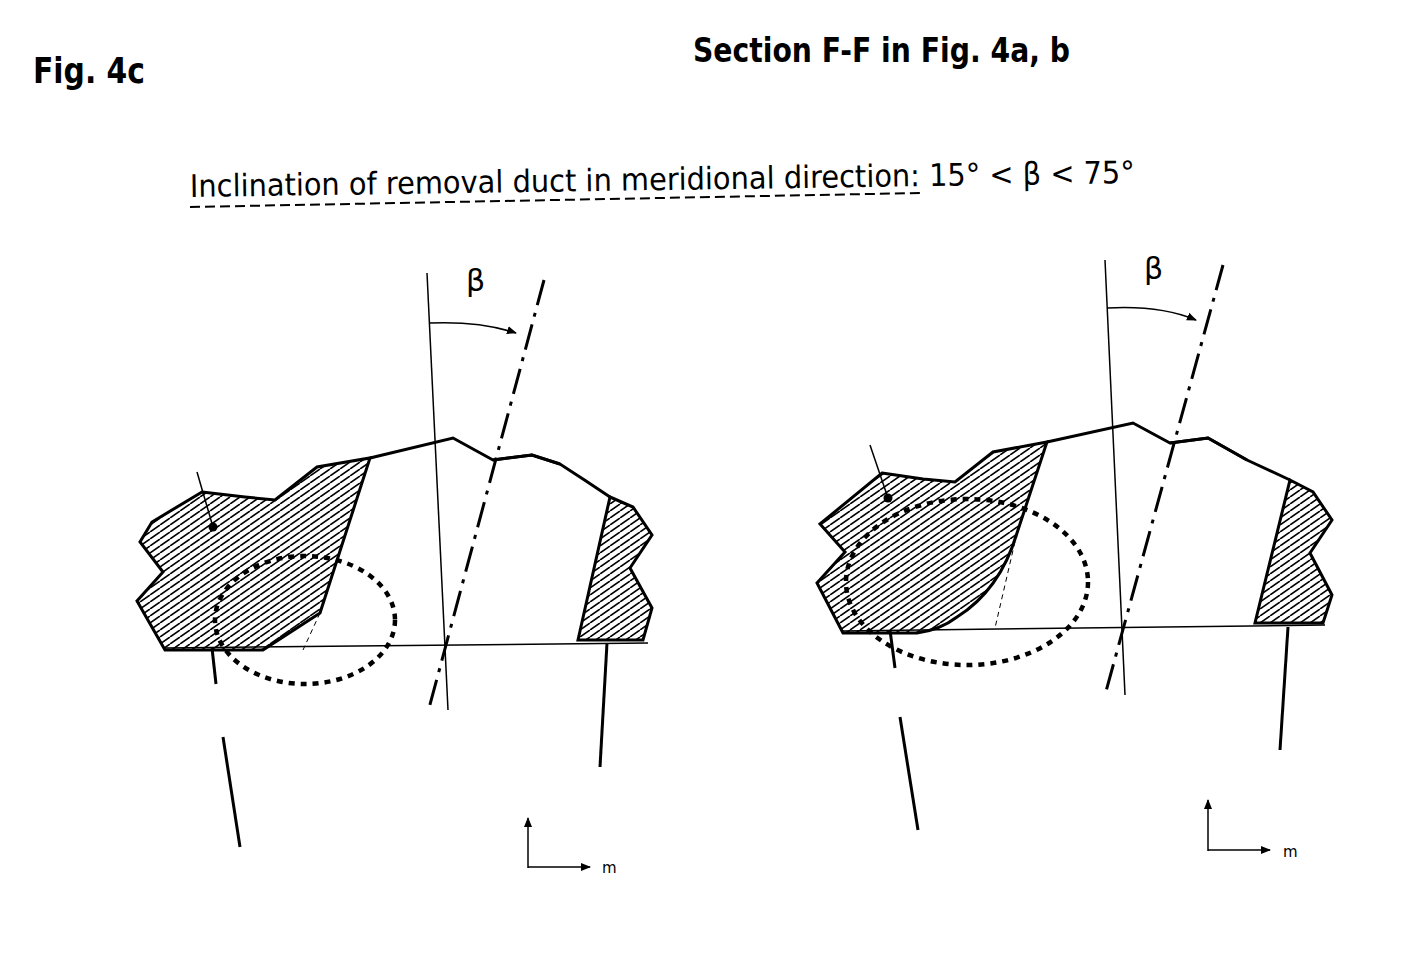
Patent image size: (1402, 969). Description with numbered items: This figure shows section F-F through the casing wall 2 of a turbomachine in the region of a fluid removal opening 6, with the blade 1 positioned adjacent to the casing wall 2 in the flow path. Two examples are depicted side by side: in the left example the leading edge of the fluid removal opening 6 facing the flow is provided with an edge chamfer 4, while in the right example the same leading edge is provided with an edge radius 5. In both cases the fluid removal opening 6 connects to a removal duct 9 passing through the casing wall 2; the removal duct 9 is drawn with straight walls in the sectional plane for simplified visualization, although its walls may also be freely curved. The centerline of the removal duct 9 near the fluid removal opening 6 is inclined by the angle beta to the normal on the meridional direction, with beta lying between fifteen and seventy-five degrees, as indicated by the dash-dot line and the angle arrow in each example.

The blade 1 is at (378, 790).
The casing (wall) 2 is at (160, 555).
The edge chamfer 4 is at (307, 646).
The edge radius 5 is at (963, 615).
The fluid removal opening (FRO) 6 is at (530, 637).
The removal duct 9 is at (533, 472).